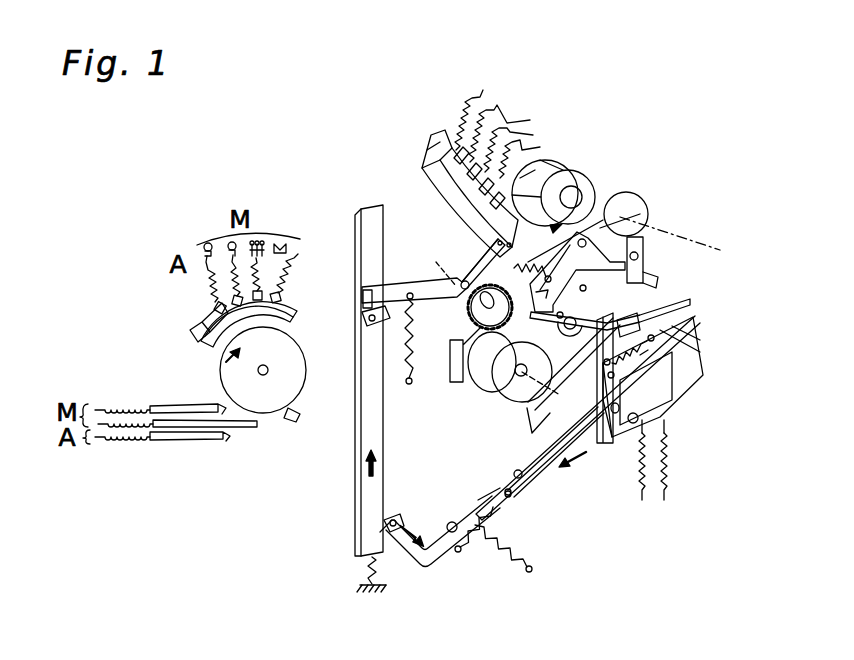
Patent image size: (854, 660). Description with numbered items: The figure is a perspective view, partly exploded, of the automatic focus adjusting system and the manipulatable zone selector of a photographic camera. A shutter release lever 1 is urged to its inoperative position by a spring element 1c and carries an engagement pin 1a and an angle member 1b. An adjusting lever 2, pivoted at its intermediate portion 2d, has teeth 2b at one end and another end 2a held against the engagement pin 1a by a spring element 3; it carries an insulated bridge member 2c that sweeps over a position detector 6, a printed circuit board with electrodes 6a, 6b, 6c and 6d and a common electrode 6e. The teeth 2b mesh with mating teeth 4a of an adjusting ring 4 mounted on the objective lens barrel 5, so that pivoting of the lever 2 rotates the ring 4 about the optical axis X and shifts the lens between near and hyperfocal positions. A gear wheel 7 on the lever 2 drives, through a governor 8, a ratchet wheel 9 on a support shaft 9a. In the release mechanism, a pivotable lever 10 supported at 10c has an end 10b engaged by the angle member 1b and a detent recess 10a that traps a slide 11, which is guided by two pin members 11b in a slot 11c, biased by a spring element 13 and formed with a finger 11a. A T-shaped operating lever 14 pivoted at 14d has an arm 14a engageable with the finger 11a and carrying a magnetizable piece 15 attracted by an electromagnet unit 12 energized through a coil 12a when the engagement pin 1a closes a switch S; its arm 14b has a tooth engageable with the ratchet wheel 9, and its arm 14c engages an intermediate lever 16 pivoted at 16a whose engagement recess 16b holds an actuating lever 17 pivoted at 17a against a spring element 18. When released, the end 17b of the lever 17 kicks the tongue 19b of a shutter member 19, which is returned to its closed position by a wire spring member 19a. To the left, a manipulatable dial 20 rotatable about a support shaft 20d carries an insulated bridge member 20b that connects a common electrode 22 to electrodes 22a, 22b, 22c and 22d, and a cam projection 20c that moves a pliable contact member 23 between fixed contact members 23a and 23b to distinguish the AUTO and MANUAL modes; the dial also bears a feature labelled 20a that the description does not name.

The shutter release lever 1 is at (365, 485).
The engagement pin 1a is at (362, 318).
The angle member 1b is at (372, 512).
The spring element 1c is at (360, 568).
The adjusting lever 2 is at (411, 290).
The end of adjusting lever 2a is at (362, 298).
The teeth 2b is at (612, 200).
The bridge member 2c is at (488, 242).
The intermediate portion 2d is at (440, 270).
The spring element 3 is at (412, 335).
The adjusting ring 4 is at (565, 160).
The mating teeth 4a is at (535, 170).
The objective lens barrel 5 is at (575, 197).
The position detector 6 is at (430, 165).
The electrode 6a is at (497, 120).
The electrode 6b is at (475, 125).
The electrode 6c is at (455, 150).
The electrode 6d is at (428, 140).
The common electrode 6e is at (420, 180).
The gear wheel 7 is at (465, 310).
The governor 8 is at (457, 375).
The ratchet wheel 9 is at (530, 400).
The support shaft 9a is at (498, 388).
The pivotable lever 10 is at (420, 560).
The detent recess 10a is at (490, 486).
The end of pivotable lever 10b is at (390, 530).
The pivot support 10c is at (452, 533).
The slide 11 is at (548, 482).
The finger 11a is at (618, 445).
The pin members 11b is at (540, 520).
The slot 11c is at (538, 472).
The electromagnet unit 12 is at (690, 370).
The coil 12a is at (665, 405).
The spring element 13 is at (503, 522).
The operating lever 14 is at (578, 378).
The arm 14a is at (650, 455).
The arm 14b is at (492, 448).
The arm 14c is at (652, 318).
The pivot support 14d is at (648, 352).
The magnetizable piece 15 is at (640, 420).
The intermediate lever 16 is at (700, 318).
The pivot support 16a is at (617, 322).
The engagement recess 16b is at (580, 472).
The actuating lever 17 is at (588, 282).
The pivot support 17a is at (655, 215).
The end of actuating lever 17b is at (667, 273).
The spring element 18 is at (527, 288).
The shutter member 19 is at (636, 205).
The wire spring member 19a is at (643, 252).
The tongue 19b is at (660, 283).
The manipulatable dial 20 is at (290, 405).
The rotation direction 20a is at (228, 356).
The electric bridge member 20b is at (200, 332).
The cam projection 20c is at (288, 414).
The support shaft 20d is at (268, 370).
The common electrode 22 is at (212, 318).
The electrode 22a is at (218, 306).
The electrode 22b is at (212, 272).
The electrode 22c is at (270, 258).
The electrode 22d is at (296, 285).
The pliable contact member 23 is at (243, 432).
The fixed contact member 23a is at (200, 440).
The fixed contact member 23b is at (180, 410).
The switch S is at (393, 387).
The optical axis X is at (692, 238).